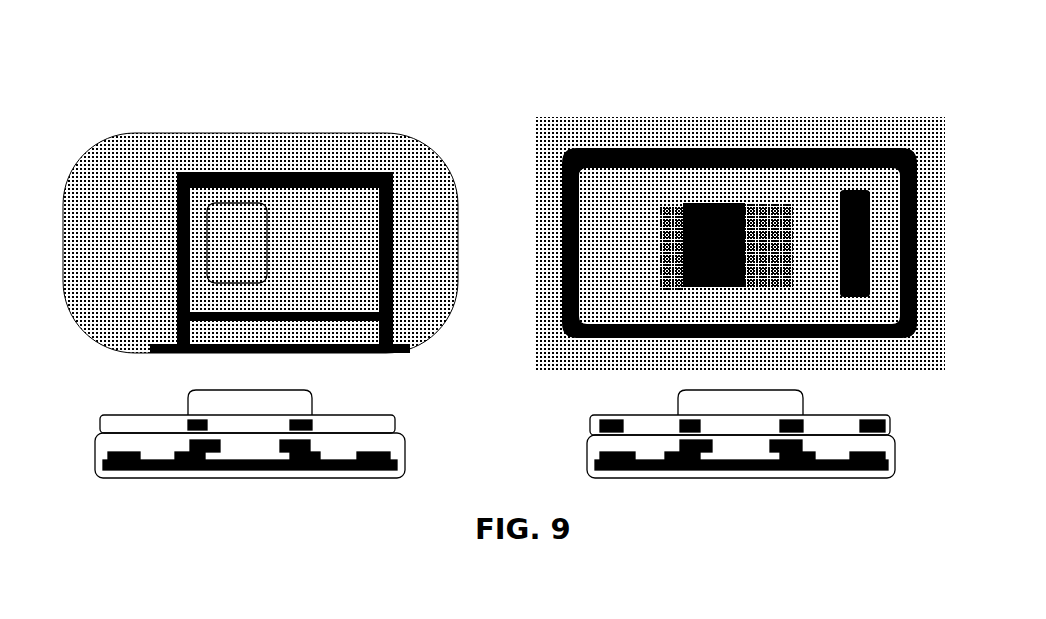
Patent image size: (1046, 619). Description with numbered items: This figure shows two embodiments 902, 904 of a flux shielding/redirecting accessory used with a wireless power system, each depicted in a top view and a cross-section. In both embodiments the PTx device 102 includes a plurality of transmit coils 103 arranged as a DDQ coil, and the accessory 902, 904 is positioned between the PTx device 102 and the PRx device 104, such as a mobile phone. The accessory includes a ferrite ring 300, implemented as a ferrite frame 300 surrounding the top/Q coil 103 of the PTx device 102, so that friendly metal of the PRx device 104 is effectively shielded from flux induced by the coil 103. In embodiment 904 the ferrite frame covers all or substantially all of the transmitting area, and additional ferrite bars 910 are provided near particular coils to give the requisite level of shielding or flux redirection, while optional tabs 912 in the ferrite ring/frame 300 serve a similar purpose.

The accessory embodiment 902 is at (163, 88).
The accessory embodiment 904 is at (606, 74).
The ferrite ring 300 is at (250, 146).
The transmit coils 103 is at (418, 152).
The PRx device 104 is at (313, 392).
The PTx device 102 is at (370, 478).
The ferrite bars 910 is at (665, 225).
The tabs 912 is at (737, 150).